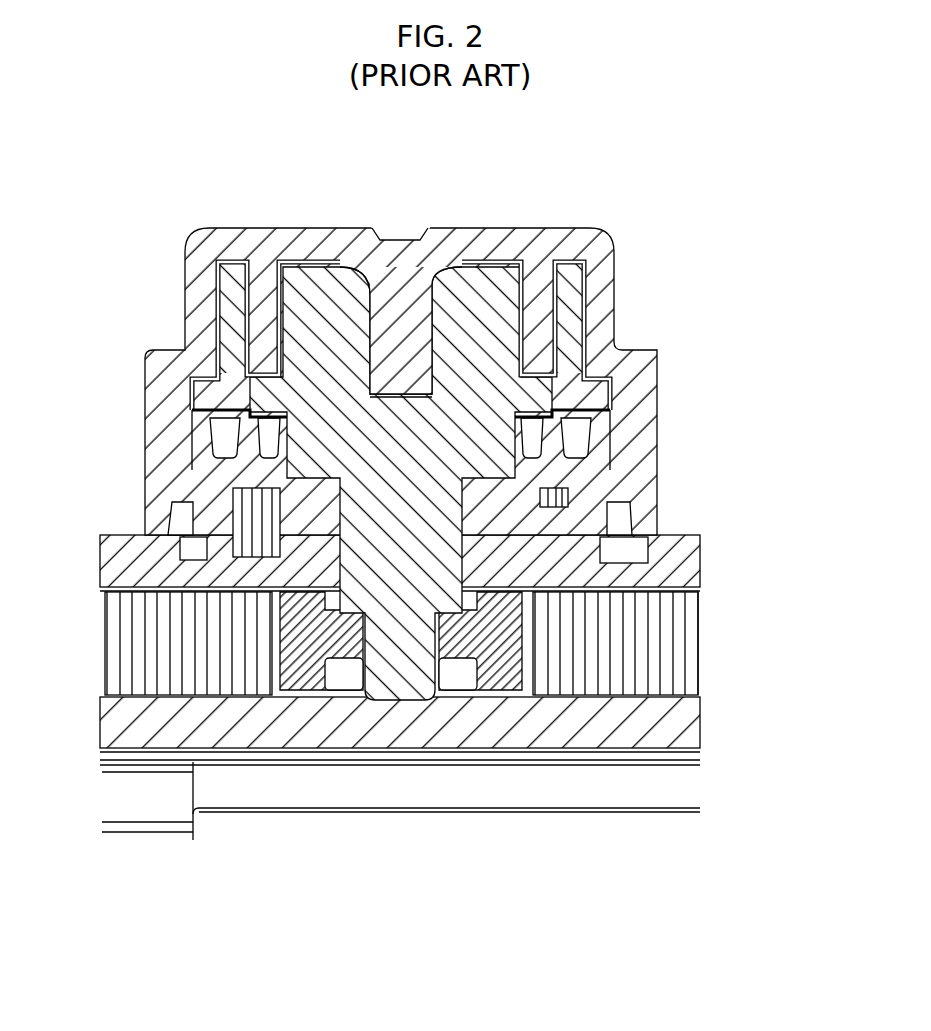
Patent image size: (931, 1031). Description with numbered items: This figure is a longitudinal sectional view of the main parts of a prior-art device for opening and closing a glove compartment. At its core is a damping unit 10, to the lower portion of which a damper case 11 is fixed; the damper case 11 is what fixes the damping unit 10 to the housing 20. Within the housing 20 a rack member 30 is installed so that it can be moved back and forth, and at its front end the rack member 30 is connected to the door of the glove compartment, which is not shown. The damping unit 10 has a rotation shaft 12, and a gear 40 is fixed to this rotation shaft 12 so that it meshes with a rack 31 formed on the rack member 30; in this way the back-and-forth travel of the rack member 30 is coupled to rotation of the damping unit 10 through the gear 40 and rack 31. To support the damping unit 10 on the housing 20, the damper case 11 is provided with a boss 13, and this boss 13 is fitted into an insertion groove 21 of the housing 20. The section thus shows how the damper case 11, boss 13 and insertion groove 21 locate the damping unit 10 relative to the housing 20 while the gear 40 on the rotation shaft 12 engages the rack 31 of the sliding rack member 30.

The damping unit 10 is at (437, 510).
The damper case 11 is at (653, 488).
The rotation shaft 12 is at (400, 593).
The boss 13 is at (478, 533).
The housing 20 is at (260, 787).
The insertion groove 21 is at (340, 513).
The rack member 30 is at (443, 727).
The rack 31 is at (655, 658).
The gear 40 is at (510, 670).